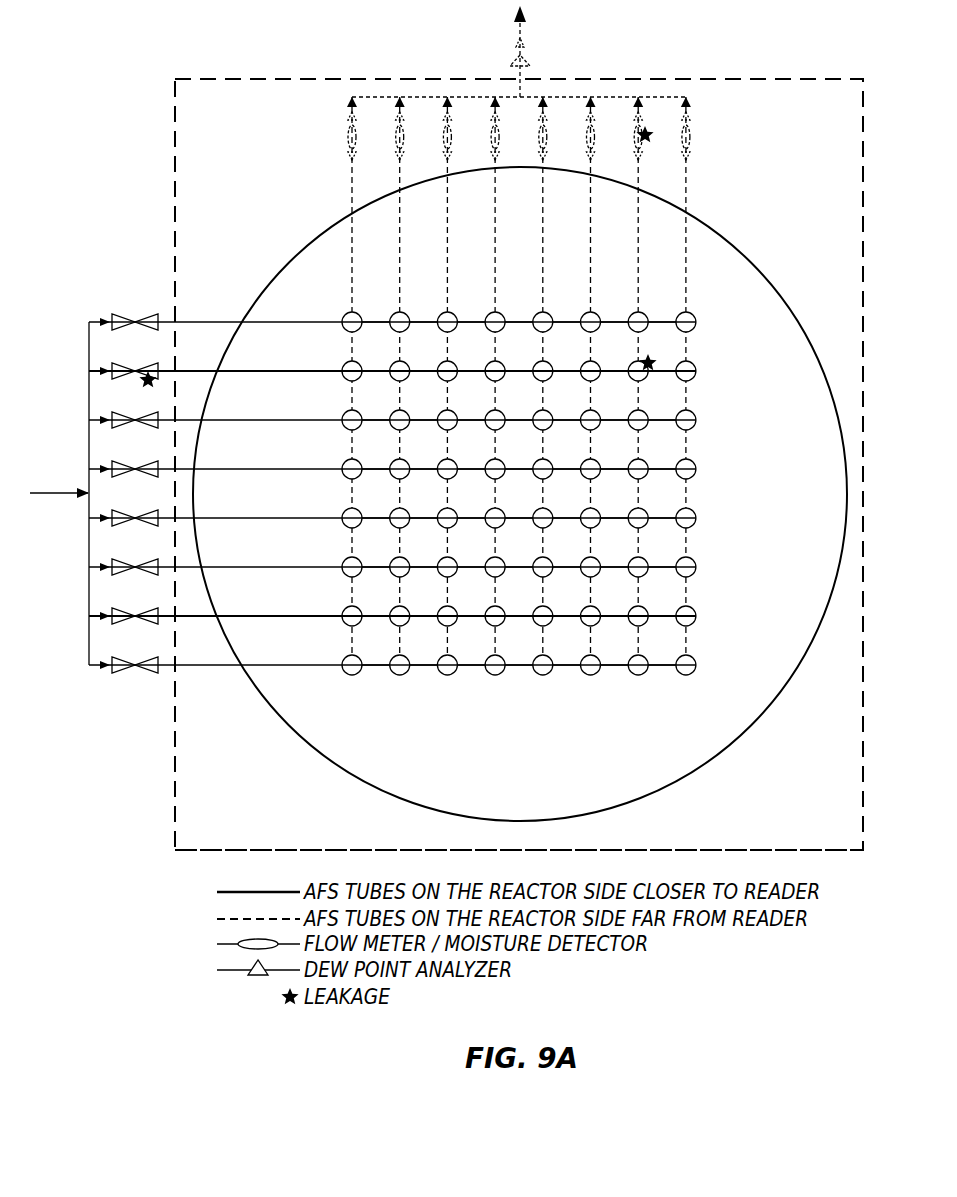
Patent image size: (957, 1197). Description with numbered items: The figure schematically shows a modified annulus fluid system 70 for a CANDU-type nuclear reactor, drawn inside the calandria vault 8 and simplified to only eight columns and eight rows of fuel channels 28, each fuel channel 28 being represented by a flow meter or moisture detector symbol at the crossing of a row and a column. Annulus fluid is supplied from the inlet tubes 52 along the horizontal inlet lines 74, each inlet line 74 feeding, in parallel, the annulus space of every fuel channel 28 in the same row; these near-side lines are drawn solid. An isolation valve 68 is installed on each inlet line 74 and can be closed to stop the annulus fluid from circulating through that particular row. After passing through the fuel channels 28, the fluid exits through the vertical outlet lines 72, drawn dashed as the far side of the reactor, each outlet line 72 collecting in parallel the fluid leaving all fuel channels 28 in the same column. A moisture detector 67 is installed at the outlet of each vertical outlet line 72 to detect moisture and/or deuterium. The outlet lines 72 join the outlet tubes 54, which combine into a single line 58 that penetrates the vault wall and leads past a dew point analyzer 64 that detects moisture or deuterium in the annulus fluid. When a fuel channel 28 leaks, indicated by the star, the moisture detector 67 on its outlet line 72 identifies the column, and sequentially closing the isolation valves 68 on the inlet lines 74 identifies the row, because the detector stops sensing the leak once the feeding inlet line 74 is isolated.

The calandria vault 8 is at (770, 848).
The fuel channel 28 is at (698, 420).
The inlet tubes 52 is at (78, 592).
The outlet tubes 54 is at (428, 90).
The single line 58 is at (532, 66).
The dew point analyzer 64 is at (513, 43).
The moisture detector 67 is at (398, 142).
The isolation valve 68 is at (128, 318).
The modified annulus fluid system 70 is at (133, 105).
The outlet line 72 is at (703, 195).
The inlet line 74 is at (203, 312).